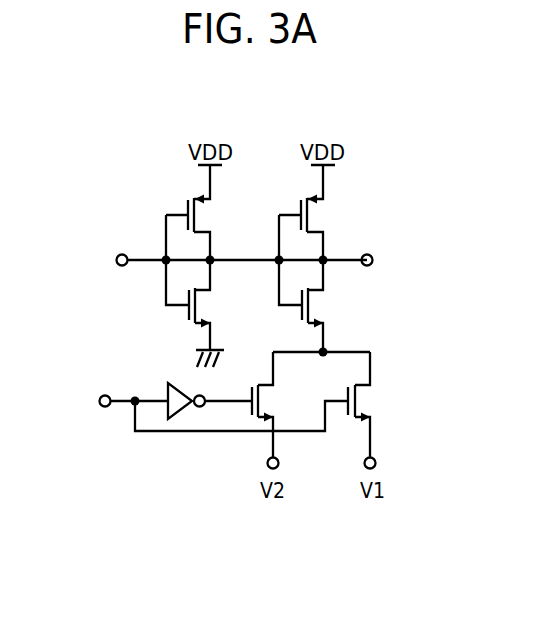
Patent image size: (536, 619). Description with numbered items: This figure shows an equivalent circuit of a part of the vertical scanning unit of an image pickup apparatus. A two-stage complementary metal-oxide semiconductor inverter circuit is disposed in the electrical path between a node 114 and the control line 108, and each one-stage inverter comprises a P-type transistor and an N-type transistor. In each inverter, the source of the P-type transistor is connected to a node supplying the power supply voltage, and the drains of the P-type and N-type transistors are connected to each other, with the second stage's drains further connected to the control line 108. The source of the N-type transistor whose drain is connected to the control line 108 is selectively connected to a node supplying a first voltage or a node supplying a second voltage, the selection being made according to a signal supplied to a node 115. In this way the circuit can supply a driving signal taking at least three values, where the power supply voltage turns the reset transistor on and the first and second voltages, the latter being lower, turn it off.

The node 114 is at (119, 254).
The control line 108 is at (370, 254).
The node 115 is at (102, 396).